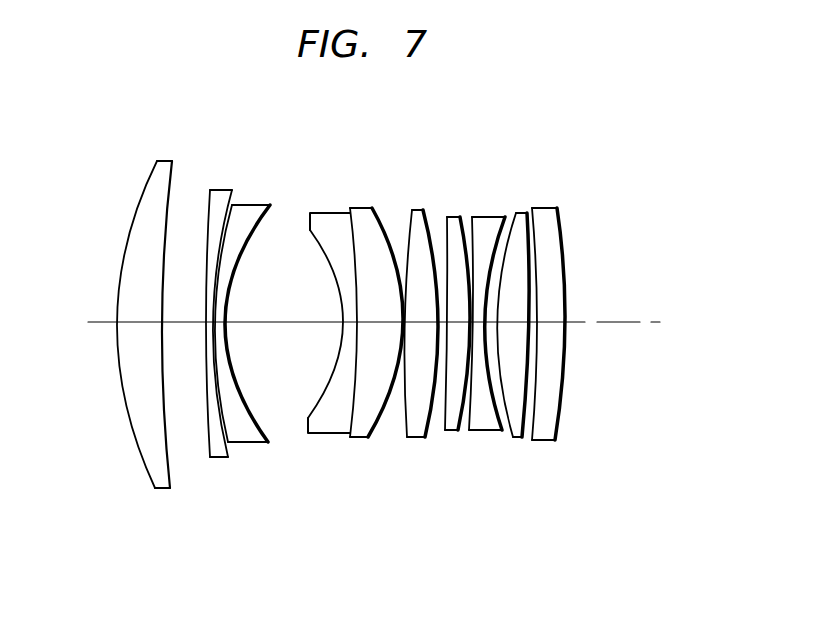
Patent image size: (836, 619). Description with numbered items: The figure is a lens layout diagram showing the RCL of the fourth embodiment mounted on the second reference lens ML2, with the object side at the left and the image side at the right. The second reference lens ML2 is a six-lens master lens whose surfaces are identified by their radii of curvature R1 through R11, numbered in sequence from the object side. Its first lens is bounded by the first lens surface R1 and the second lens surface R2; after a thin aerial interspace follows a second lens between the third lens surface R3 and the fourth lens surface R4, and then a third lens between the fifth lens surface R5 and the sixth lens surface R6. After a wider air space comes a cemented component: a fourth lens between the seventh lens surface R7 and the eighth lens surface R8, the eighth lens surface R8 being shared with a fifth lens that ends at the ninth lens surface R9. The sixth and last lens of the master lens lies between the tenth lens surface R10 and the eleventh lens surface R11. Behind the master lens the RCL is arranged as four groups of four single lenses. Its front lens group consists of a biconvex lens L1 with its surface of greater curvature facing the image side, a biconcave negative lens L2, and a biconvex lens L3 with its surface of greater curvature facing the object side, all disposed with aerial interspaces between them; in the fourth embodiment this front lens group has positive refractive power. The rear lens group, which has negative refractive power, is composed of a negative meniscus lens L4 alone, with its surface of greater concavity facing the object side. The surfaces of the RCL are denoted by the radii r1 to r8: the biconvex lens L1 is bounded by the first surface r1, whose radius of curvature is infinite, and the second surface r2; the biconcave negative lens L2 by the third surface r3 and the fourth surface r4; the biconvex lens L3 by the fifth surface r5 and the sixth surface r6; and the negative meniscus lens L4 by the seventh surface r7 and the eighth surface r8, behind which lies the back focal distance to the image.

The first lens surface R1 is at (155, 487).
The second lens surface R2 is at (169, 480).
The third lens surface R3 is at (211, 458).
The fourth lens surface R4 is at (228, 440).
The fifth lens surface R5 is at (231, 446).
The sixth lens surface R6 is at (258, 420).
The seventh lens surface R7 is at (316, 416).
The eighth lens surface R8 is at (351, 420).
The ninth lens surface R9 is at (386, 437).
The tenth lens surface R10 is at (408, 432).
The eleventh lens surface R11 is at (434, 432).
The second reference lens ML2 is at (428, 556).
The element RCL is at (568, 150).
The biconvex lens L1 is at (450, 216).
The biconcave negative lens L2 is at (487, 216).
The biconvex lens L3 is at (522, 212).
The negative meniscus lens L4 is at (549, 207).
The first surface of the RCL r1 is at (446, 428).
The second surface of the RCL r2 is at (460, 435).
The third surface of the RCL r3 is at (474, 425).
The fourth surface of the RCL r4 is at (503, 432).
The fifth surface of the RCL r5 is at (516, 437).
The sixth surface of the RCL r6 is at (524, 440).
The seventh surface of the RCL r7 is at (535, 441).
The eighth surface of the RCL r8 is at (557, 441).